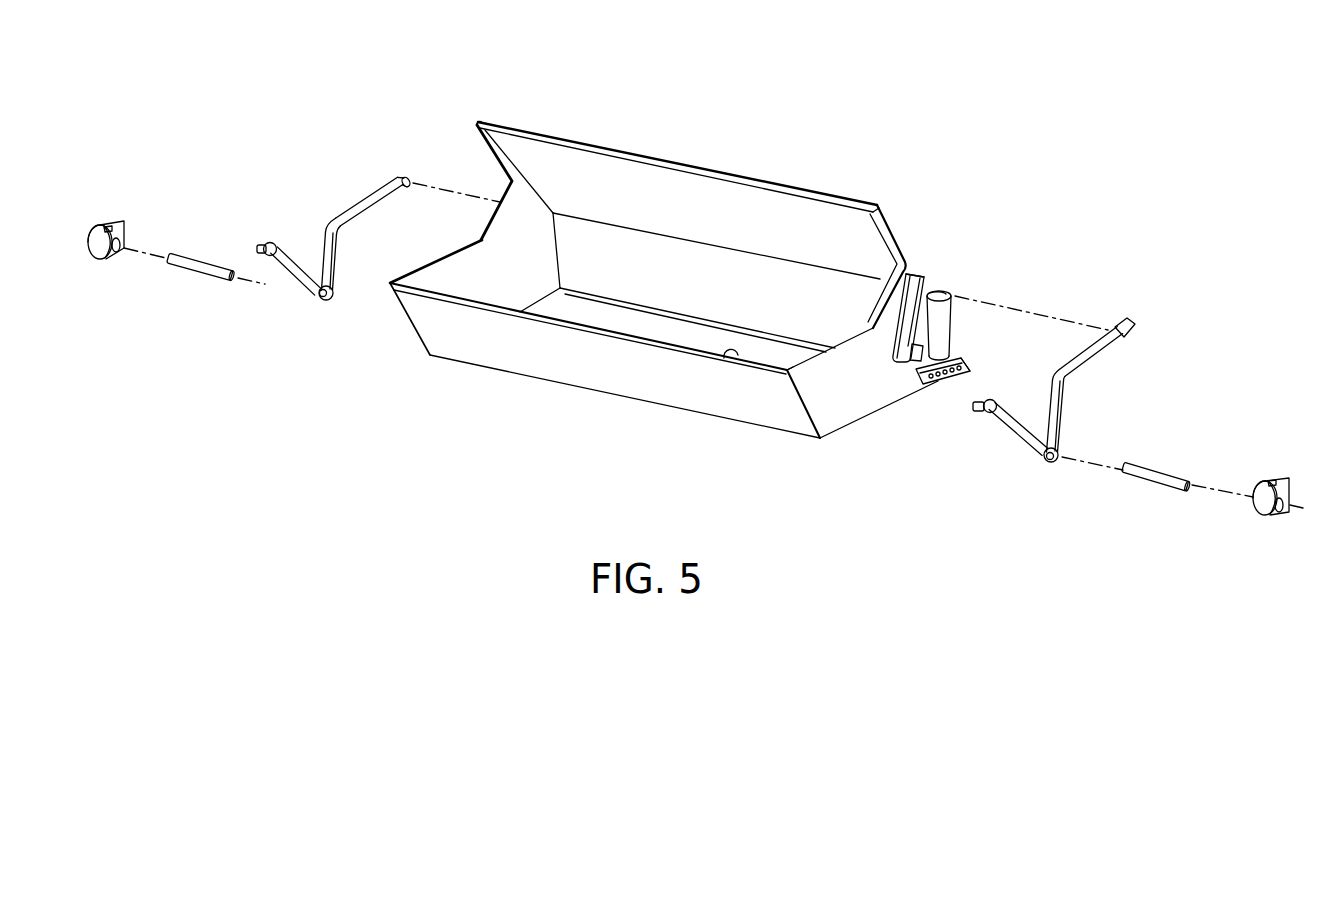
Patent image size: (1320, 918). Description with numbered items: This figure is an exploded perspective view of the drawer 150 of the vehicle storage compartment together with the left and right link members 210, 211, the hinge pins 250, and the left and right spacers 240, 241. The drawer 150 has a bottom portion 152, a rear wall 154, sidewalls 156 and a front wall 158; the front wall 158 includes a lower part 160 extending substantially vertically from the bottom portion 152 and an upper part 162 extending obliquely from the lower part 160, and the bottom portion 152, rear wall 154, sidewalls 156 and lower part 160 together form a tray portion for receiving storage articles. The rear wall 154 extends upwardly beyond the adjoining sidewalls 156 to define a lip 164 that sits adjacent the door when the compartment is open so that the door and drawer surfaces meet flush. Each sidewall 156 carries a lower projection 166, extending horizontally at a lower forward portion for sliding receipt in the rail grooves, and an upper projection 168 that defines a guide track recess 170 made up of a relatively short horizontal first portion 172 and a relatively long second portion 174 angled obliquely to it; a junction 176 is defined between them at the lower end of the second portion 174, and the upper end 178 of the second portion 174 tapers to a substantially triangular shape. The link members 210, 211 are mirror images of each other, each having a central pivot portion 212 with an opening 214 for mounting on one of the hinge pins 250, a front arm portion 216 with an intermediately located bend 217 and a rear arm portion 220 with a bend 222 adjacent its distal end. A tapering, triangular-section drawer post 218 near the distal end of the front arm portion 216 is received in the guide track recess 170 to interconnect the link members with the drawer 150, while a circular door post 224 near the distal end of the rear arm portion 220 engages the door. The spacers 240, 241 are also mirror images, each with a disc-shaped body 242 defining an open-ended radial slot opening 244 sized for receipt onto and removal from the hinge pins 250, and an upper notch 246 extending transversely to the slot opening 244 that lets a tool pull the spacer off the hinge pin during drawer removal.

The drawer 150 is at (690, 163).
The bottom portion 152 is at (607, 320).
The rear wall 154 is at (427, 323).
The sidewalls 156 is at (457, 270).
The front wall 158 is at (818, 216).
The lower part 160 is at (602, 250).
The upper part 162 is at (547, 152).
The lip 164 is at (728, 360).
The lower projections 166 is at (968, 376).
The upper projection 168 is at (921, 284).
The guide track recess 170 is at (945, 295).
The first portion 172 is at (944, 362).
The second portion 174 is at (962, 302).
The junction 176 is at (905, 364).
The upper end 178 is at (937, 290).
The left link member 210 is at (366, 197).
The right link member 211 is at (1108, 356).
The central pivot portion 212 is at (318, 300).
The opening 214 is at (324, 297).
The front arm portion 216 is at (389, 194).
The bend 217 is at (330, 220).
The drawer post 218 is at (404, 177).
The rear arm portion 220 is at (290, 260).
The bend 222 is at (270, 242).
The door post 224 is at (262, 247).
The left spacer 240 is at (106, 222).
The right spacer 241 is at (1268, 484).
The disc-shaped body 242 is at (94, 255).
The slot opening 244 is at (116, 255).
The upper notch 246 is at (97, 231).
The hinge pins 250 is at (203, 275).